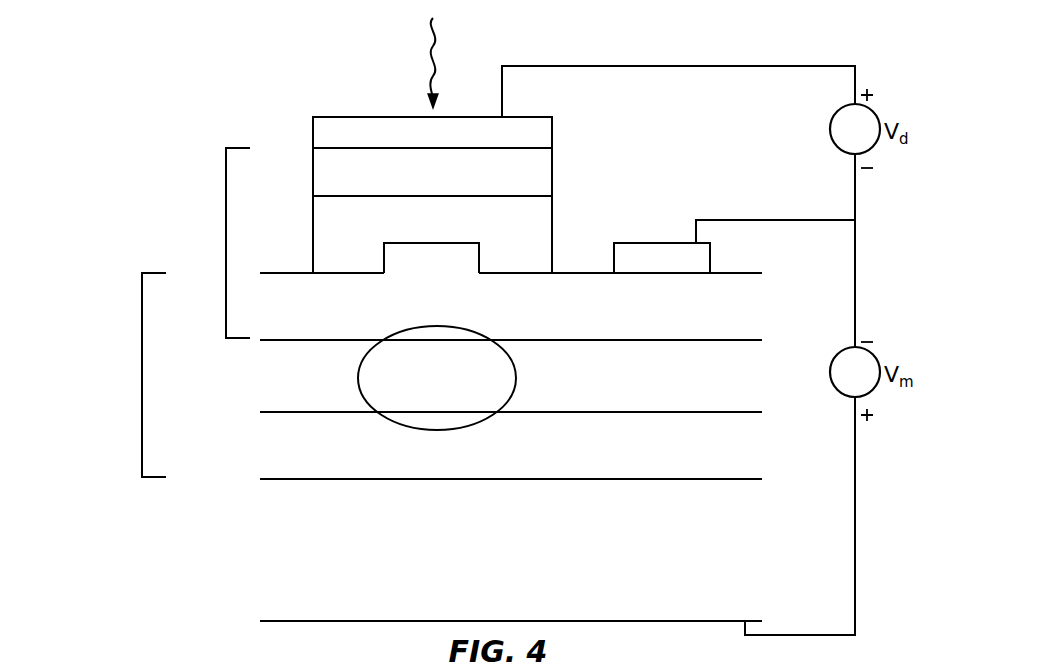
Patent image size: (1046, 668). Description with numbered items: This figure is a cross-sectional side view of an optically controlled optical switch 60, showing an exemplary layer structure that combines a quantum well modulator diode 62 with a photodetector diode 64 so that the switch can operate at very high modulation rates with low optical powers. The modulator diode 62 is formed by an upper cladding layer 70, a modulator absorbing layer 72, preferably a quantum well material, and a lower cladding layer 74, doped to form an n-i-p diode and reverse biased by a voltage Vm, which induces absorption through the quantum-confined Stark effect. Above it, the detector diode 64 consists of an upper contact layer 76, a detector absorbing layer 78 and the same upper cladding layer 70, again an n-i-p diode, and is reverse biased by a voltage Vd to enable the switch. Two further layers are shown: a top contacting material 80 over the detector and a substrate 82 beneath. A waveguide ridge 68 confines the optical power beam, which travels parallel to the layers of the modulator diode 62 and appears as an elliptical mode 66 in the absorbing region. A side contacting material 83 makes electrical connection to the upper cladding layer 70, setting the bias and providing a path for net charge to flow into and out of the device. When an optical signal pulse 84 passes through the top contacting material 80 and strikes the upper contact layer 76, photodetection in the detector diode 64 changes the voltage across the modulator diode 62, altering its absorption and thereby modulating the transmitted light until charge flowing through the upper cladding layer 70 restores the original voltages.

The optically controlled optical switch 60 is at (280, 90).
The modulator diode 62 is at (142, 380).
The detector diode 64 is at (226, 243).
The mode 66 is at (516, 384).
The waveguide ridge 68 is at (407, 259).
The upper cladding layer 70 is at (324, 319).
The modulator absorbing layer 72 is at (324, 384).
The lower cladding layer 74 is at (324, 455).
The upper contact layer 76 is at (553, 171).
The detector absorbing layer 78 is at (553, 240).
The top contacting material 80 is at (553, 137).
The substrate 82 is at (324, 555).
The side contacting material 83 is at (672, 243).
The optical signal pulse 84 is at (442, 58).